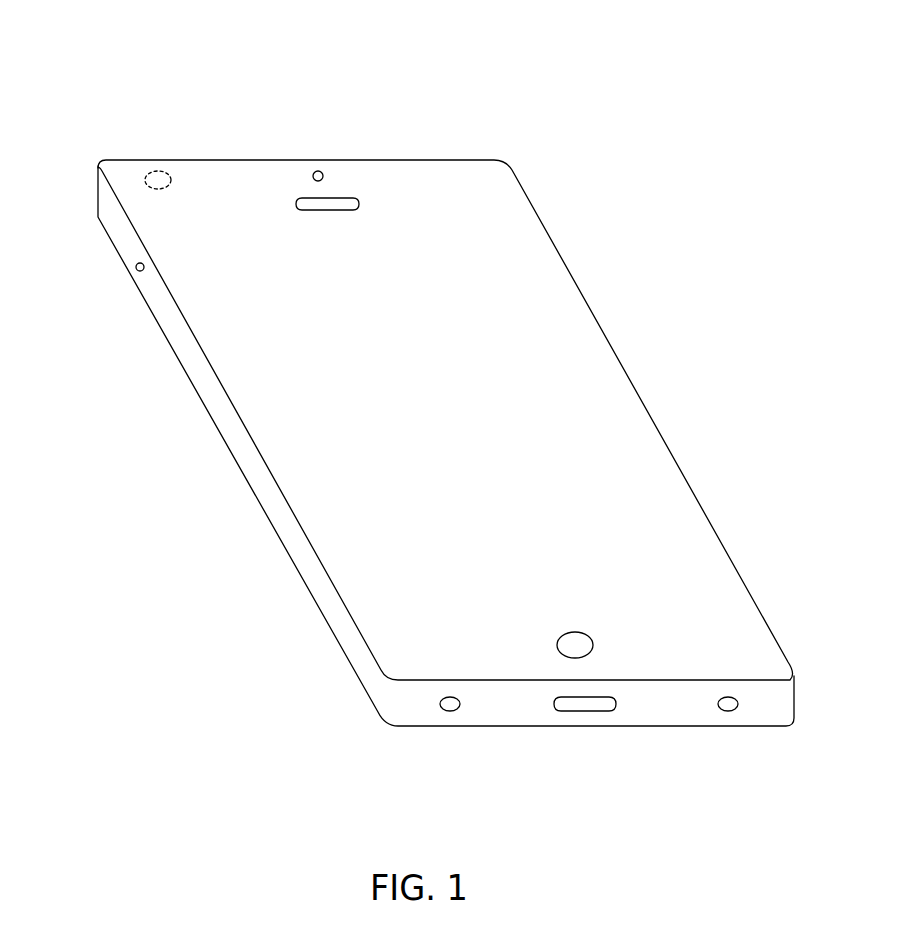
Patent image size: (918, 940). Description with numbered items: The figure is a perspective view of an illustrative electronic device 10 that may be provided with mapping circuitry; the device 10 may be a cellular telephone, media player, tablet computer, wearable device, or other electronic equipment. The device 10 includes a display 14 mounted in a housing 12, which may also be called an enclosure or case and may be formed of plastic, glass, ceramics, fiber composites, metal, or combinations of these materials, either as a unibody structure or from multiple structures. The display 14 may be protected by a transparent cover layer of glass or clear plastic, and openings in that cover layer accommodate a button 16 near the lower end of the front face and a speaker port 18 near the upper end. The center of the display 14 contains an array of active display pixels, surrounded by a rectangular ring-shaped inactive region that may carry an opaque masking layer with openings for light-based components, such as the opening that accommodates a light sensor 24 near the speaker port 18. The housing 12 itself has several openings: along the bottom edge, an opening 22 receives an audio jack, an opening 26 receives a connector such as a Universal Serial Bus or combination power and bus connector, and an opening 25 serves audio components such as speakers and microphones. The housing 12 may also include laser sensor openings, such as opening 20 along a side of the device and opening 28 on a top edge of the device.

The electronic device 10 is at (446, 368).
The housing 12 is at (262, 492).
The display 14 is at (566, 316).
The button 16 is at (557, 649).
The speaker port 18 is at (345, 198).
The opening 20 is at (160, 167).
The opening 22 is at (451, 711).
The light sensor 24 is at (320, 170).
The opening 25 is at (726, 711).
The opening 26 is at (586, 711).
The opening 28 is at (137, 272).